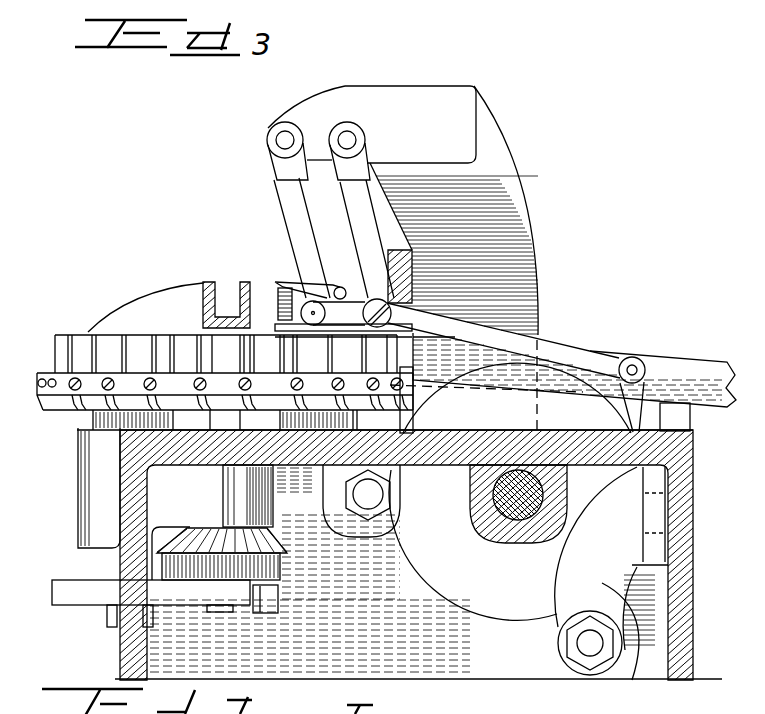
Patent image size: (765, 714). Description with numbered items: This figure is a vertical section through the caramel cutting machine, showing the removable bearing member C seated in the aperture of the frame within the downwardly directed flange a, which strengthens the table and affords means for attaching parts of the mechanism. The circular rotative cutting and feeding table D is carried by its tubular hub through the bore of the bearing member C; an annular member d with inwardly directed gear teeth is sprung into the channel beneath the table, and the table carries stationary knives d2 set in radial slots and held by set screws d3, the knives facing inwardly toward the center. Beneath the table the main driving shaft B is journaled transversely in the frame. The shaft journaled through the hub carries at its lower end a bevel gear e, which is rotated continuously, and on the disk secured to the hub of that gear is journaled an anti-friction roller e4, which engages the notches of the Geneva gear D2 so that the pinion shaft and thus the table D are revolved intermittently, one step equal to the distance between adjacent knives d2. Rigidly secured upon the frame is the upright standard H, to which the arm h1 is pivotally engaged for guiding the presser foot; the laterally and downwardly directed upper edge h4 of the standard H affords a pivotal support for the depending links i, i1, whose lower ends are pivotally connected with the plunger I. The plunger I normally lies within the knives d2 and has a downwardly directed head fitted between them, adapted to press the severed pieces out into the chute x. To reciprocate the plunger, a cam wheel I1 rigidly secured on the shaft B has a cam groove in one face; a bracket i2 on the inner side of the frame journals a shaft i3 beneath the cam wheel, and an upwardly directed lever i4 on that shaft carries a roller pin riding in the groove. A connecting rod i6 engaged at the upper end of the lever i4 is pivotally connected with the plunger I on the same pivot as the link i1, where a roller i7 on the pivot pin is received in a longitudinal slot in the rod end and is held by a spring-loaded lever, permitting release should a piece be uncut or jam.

The standard H is at (500, 172).
The arm h1 is at (262, 290).
The upper edge of the standard h4 is at (318, 120).
The depending link i is at (293, 204).
The depending link i1 is at (360, 209).
The bracket i2 is at (647, 650).
The shaft i3 is at (590, 650).
The lever i4 is at (627, 393).
The connecting rod i6 is at (547, 334).
The roller i7 is at (382, 303).
The plunger I is at (418, 388).
The cam wheel I1 is at (553, 393).
The chute x is at (677, 373).
The cutting and feeding table D is at (130, 383).
The annular member d is at (118, 550).
The stationary knife d2 is at (77, 343).
The set screw d3 is at (73, 397).
The Geneva gear D2 is at (88, 593).
The bearing member C is at (245, 497).
The bevel gear e is at (283, 558).
The anti-friction roller e4 is at (262, 612).
The main driving shaft B is at (525, 507).
The flange a is at (680, 574).